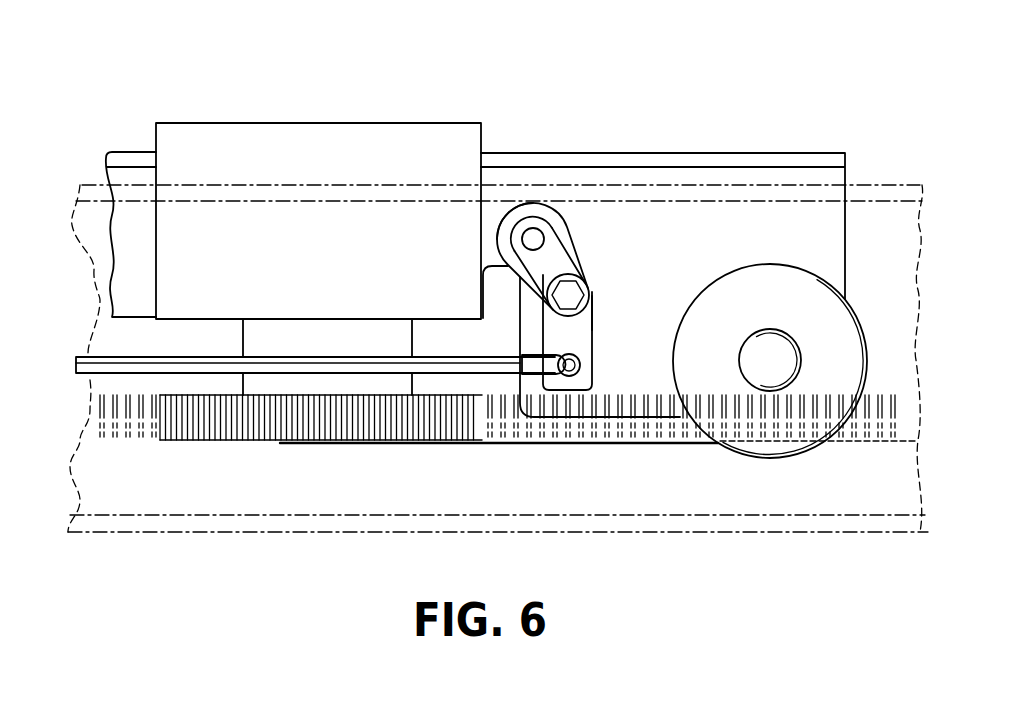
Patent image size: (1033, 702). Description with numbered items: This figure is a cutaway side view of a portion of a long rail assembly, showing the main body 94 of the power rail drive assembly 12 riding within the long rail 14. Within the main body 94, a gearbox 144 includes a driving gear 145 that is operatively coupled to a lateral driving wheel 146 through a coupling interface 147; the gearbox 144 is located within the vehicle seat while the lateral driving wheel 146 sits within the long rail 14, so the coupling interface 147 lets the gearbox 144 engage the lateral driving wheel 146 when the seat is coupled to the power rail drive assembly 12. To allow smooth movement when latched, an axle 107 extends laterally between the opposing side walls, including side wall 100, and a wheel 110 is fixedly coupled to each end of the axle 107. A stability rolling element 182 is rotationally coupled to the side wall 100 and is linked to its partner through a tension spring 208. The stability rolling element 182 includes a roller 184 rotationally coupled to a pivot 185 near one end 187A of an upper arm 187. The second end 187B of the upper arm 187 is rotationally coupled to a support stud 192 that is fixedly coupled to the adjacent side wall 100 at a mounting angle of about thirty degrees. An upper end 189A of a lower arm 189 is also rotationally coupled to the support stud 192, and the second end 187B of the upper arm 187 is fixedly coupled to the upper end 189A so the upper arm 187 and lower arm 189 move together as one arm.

The power rail drive assembly 12 is at (722, 108).
The long rail 14 is at (80, 183).
The main body 94 is at (115, 143).
The side wall 100 is at (755, 237).
The axle 107 is at (802, 367).
The wheel 110 is at (855, 313).
The gearbox 144 is at (340, 122).
The driving gear 145 is at (231, 338).
The lateral driving wheel 146 is at (177, 433).
The coupling interface 147 is at (231, 384).
The stability rolling element 182 is at (537, 199).
The roller 184 is at (513, 209).
The pivot 185 is at (535, 239).
The upper arm 187 is at (586, 262).
The first end of upper arm 187A is at (511, 237).
The second end of upper arm 187B is at (574, 259).
The lower arm 189 is at (595, 332).
The upper end of lower arm 189A is at (590, 296).
The support stud 192 is at (569, 300).
The tension spring 208 is at (100, 377).